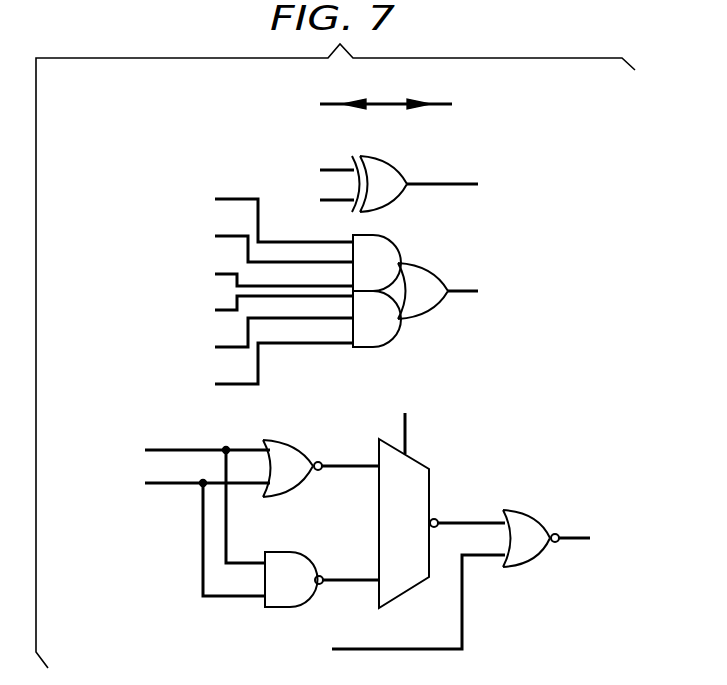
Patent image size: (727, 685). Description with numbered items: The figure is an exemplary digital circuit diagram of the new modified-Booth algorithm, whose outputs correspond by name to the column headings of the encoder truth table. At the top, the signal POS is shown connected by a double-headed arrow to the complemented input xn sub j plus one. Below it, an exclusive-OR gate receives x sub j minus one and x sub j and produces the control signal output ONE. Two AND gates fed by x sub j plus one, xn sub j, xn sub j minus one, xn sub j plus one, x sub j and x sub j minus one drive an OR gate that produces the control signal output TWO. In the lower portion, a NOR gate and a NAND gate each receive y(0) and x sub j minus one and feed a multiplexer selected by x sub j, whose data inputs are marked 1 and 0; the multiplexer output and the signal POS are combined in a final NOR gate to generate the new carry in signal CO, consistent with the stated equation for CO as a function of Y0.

The multiplexer input 1 is at (361, 481).
The multiplexer input 0 is at (361, 573).
The POS control signal output POS is at (374, 107).
The ONE control signal output ONE is at (395, 187).
The TWO control signal output TWO is at (338, 292).
The new carry in signal CO is at (358, 521).